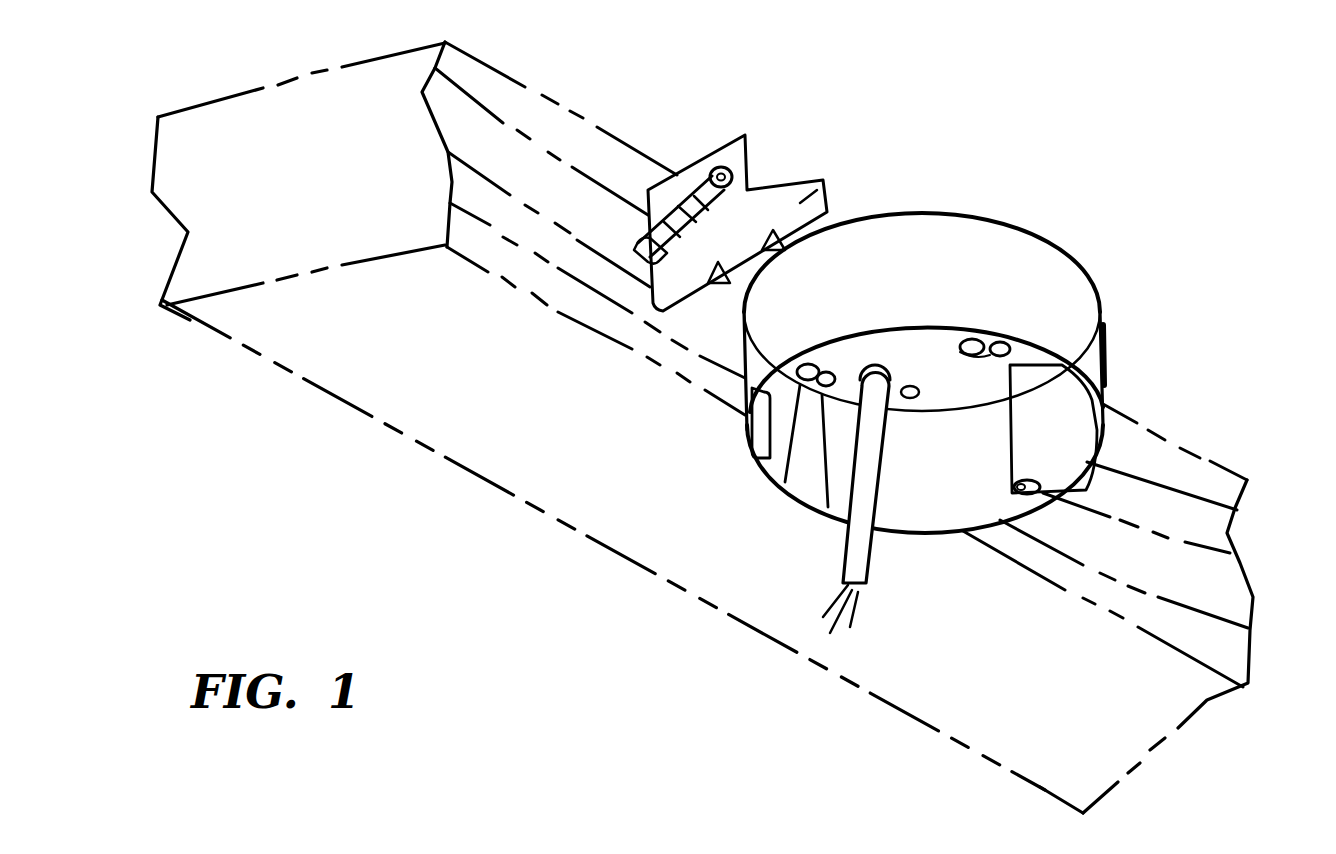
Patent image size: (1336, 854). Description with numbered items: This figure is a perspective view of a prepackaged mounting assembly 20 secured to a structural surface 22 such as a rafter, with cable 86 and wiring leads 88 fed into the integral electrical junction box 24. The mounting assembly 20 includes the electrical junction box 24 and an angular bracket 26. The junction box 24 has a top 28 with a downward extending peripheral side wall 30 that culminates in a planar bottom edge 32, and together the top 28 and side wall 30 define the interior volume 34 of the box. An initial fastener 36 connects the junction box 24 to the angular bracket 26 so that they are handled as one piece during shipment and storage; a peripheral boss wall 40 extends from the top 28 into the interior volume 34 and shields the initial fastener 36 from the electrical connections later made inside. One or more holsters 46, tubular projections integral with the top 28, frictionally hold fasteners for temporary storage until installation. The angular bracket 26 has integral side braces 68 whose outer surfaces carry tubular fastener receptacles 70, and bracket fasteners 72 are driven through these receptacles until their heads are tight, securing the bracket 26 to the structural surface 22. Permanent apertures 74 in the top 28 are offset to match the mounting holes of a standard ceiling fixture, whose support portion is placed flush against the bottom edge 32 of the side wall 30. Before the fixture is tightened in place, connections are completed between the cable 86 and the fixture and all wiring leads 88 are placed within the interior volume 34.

The prepackaged mounting assembly 20 is at (1160, 295).
The structural surface 22 is at (560, 190).
The electrical junction box 24 is at (746, 369).
The angular bracket 26 is at (742, 136).
The top 28 is at (1007, 217).
The peripheral side wall 30 is at (997, 270).
The planar bottom edge 32 is at (1108, 608).
The interior volume 34 is at (855, 365).
The initial fastener 36 is at (978, 365).
The peripheral boss wall 40 is at (1015, 343).
The holsters 46 is at (913, 385).
The side braces 68 is at (825, 183).
The tubular fastener receptacles 70 is at (676, 177).
The bracket fasteners 72 is at (749, 149).
The permanent aperture 74 is at (1027, 482).
The cable 86 is at (867, 562).
The wiring leads 88 is at (850, 613).